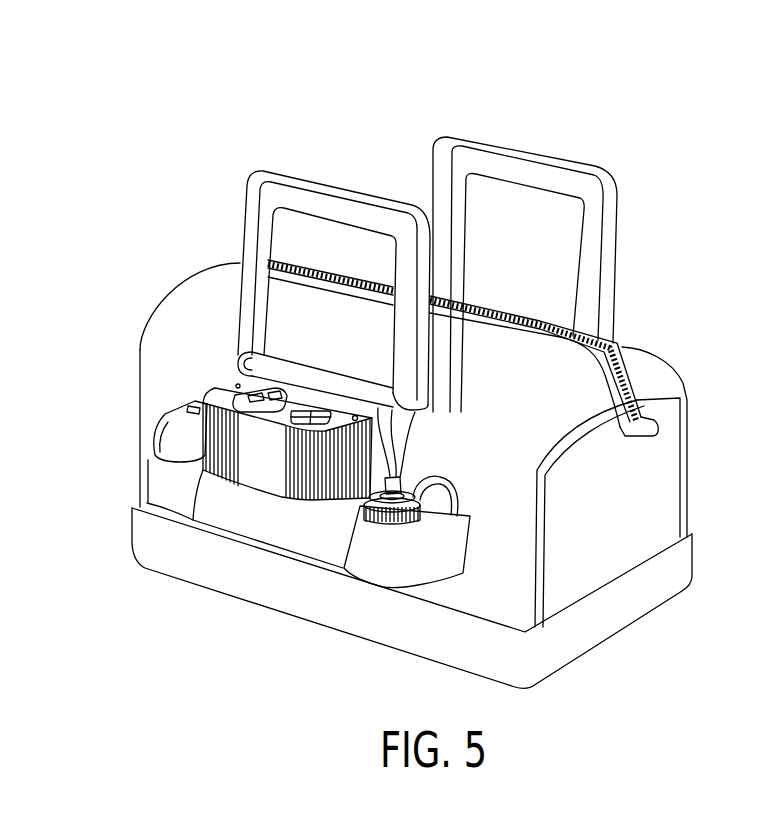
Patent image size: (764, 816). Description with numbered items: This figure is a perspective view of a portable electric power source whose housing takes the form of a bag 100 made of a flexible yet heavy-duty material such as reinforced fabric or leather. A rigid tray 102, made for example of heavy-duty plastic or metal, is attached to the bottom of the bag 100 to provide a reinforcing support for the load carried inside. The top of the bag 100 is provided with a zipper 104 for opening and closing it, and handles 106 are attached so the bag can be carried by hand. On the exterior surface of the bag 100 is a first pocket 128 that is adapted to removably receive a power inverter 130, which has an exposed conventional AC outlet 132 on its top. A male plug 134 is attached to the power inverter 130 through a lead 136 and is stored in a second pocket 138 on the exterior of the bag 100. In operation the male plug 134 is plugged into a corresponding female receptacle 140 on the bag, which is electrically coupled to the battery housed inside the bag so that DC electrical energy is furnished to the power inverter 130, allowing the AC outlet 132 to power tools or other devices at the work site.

The bag 100 is at (655, 372).
The rigid tray 102 is at (668, 578).
The zipper 104 is at (620, 345).
The handles 106 is at (338, 208).
The first pocket 128 is at (330, 507).
The power inverter 130 is at (273, 448).
The AC outlet 132 is at (240, 384).
The male plug 134 is at (400, 477).
The lead 136 is at (445, 487).
The second pocket 138 is at (457, 530).
The female receptacle 140 is at (187, 433).